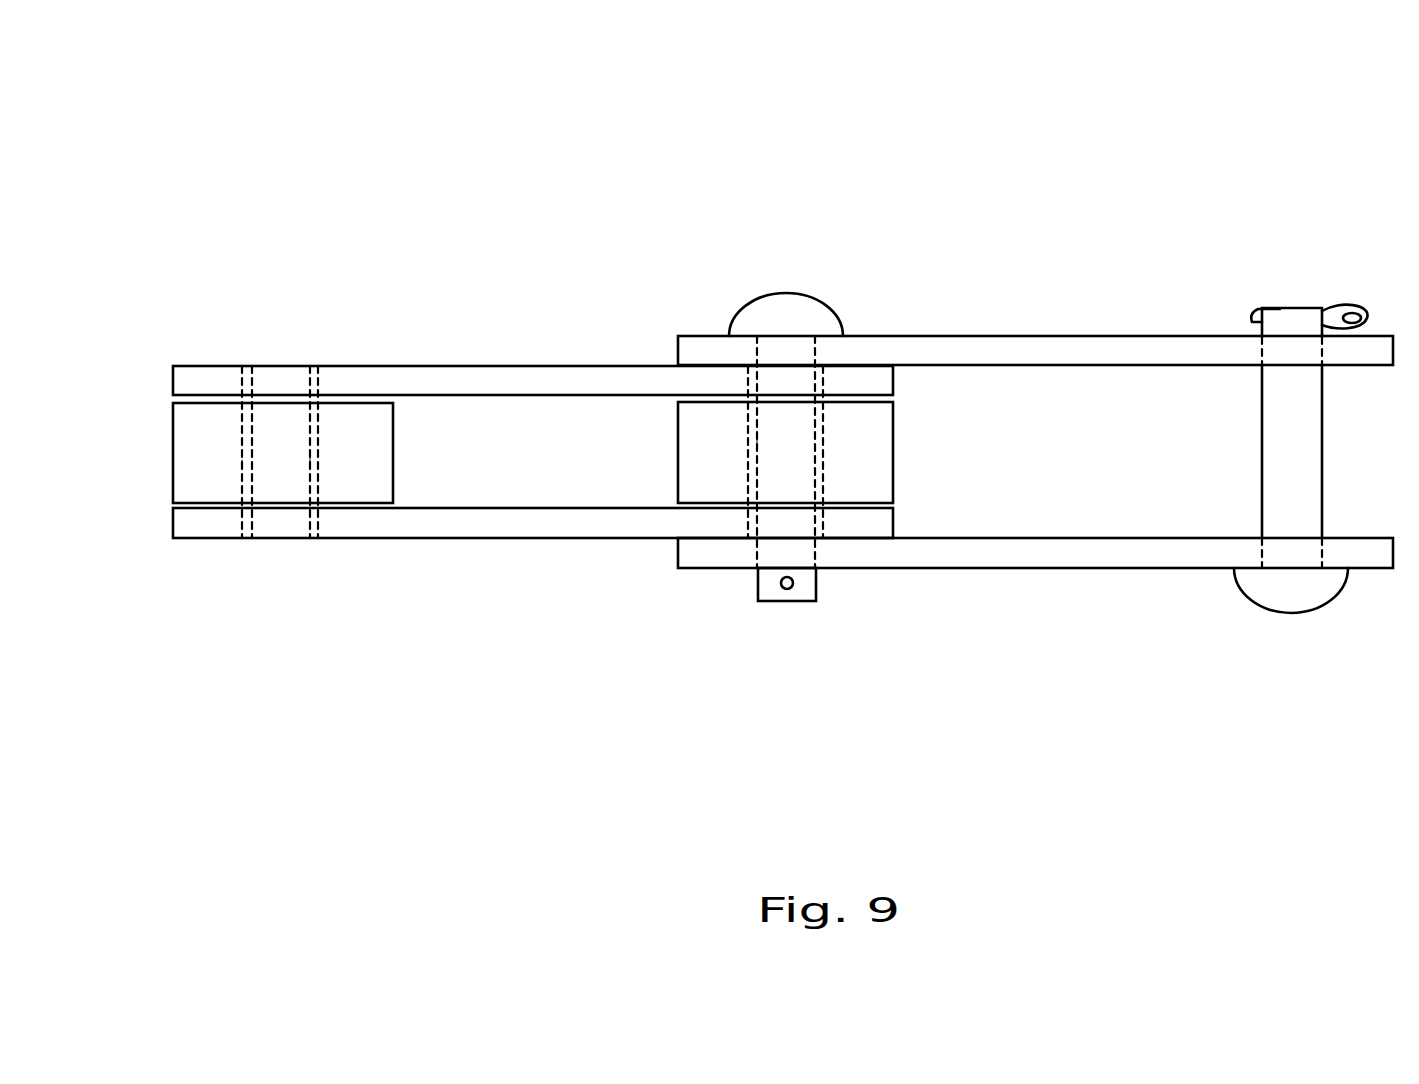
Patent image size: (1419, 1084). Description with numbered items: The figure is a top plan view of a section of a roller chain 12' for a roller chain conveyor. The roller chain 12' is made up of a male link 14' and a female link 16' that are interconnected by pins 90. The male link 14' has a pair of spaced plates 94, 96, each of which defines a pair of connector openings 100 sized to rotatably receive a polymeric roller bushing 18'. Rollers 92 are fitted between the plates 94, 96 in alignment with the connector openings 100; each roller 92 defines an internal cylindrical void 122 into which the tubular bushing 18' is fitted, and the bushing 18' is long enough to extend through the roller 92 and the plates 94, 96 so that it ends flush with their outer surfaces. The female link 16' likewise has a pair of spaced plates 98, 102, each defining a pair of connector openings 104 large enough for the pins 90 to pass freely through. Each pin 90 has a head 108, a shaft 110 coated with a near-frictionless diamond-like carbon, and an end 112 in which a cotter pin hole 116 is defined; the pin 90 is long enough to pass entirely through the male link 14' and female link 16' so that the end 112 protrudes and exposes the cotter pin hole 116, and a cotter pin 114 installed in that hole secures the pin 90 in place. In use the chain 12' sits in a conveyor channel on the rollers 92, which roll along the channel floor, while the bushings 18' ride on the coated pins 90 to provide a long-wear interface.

The roller chain 12' is at (753, 400).
The male link 14' is at (533, 437).
The female link 16' is at (1035, 444).
The polymeric roller bushing 18' is at (556, 470).
The pin 90 is at (794, 276).
The roller 92 is at (395, 478).
The plate 94 is at (530, 383).
The plate 96 is at (457, 527).
The plate 98 is at (1157, 348).
The connector opening 100 is at (242, 383).
The plate 102 is at (1105, 558).
The connector opening 104 is at (757, 347).
The head 108 is at (822, 302).
The shaft 110 is at (1292, 445).
The end 112 is at (1315, 307).
The cotter pin 114 is at (1367, 310).
The cotter pin hole 116 is at (1253, 327).
The internal cylindrical void 122 is at (317, 465).